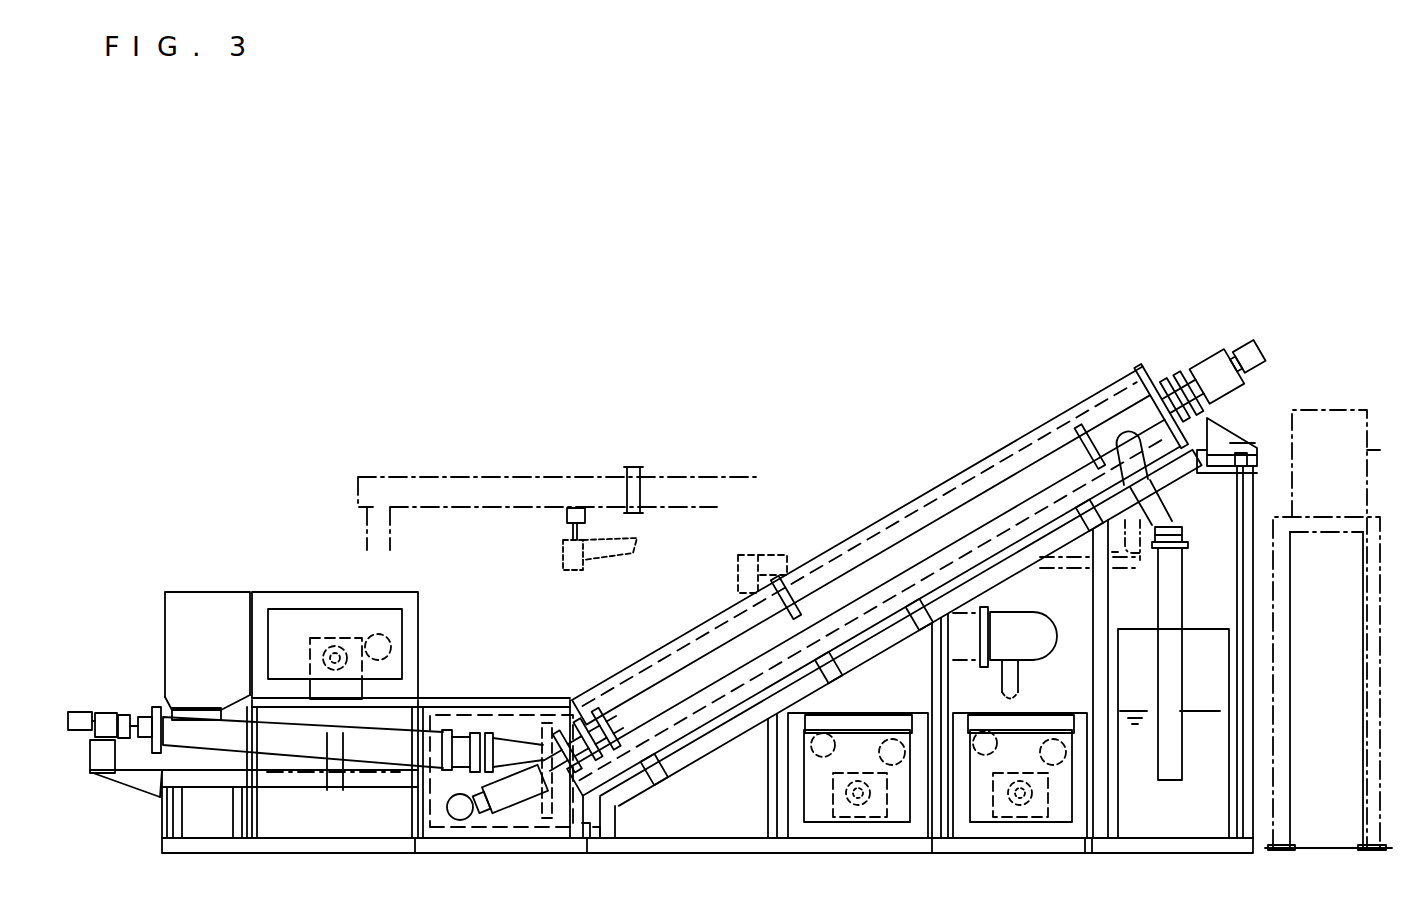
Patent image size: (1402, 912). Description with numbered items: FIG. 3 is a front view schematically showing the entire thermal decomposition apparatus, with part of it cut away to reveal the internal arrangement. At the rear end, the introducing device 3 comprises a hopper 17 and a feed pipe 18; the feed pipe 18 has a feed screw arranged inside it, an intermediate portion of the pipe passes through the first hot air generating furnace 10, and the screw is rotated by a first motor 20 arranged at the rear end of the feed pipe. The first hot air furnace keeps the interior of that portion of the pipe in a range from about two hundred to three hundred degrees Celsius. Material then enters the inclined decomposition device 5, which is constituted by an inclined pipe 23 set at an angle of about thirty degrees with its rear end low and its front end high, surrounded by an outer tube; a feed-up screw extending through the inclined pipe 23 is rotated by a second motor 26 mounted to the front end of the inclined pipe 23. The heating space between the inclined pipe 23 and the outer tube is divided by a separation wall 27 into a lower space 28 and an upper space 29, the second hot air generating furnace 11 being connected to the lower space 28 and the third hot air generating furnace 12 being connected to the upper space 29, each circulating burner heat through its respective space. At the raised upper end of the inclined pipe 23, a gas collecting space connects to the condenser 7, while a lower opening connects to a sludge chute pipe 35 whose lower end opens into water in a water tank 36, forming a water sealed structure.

The introducing device 3 is at (234, 568).
The inclined decomposition device 5 is at (895, 478).
The condenser 7 is at (1017, 617).
The first hot air generating furnace 10 is at (297, 622).
The second hot air generating furnace 11 is at (857, 747).
The third hot air generating furnace 12 is at (1030, 740).
The hopper 17 is at (185, 630).
The feed pipe 18 is at (420, 697).
The first motor 20 is at (76, 712).
The inclined pipe 23 is at (670, 670).
The second motor 26 is at (1250, 345).
The separation wall 27 is at (790, 585).
The lower space 28 is at (717, 642).
The upper space 29 is at (1020, 462).
The sludge chute pipe 35 is at (1165, 603).
The water tank 36 is at (1205, 636).